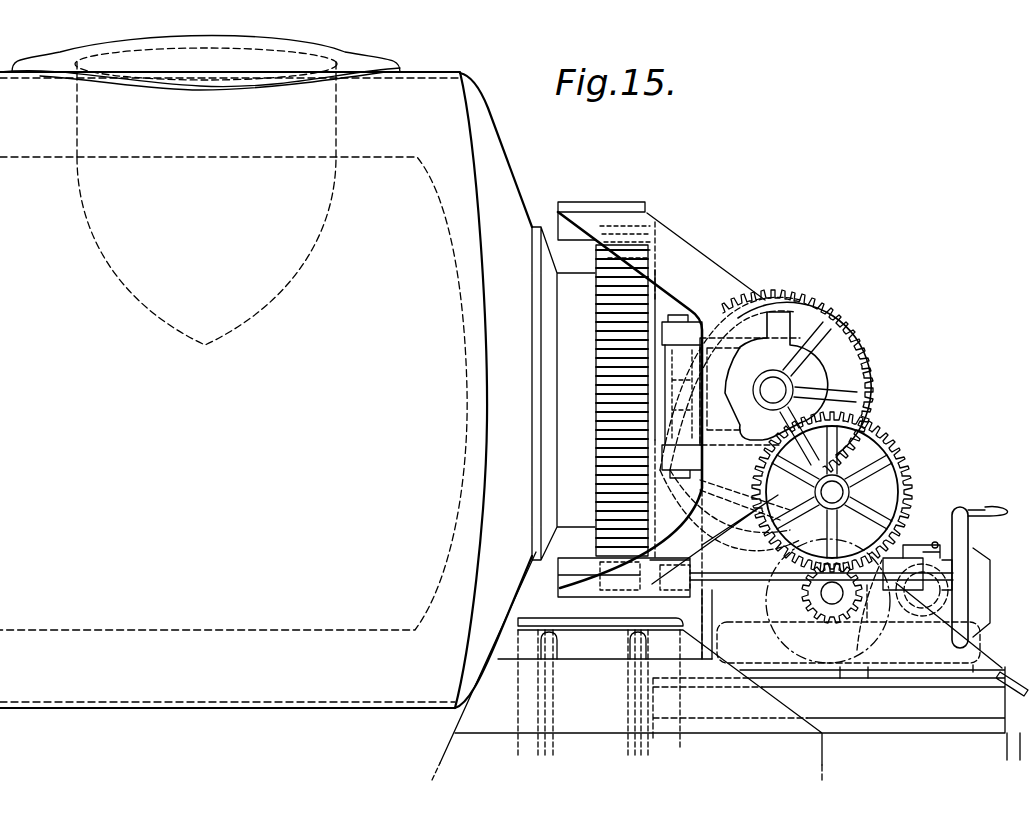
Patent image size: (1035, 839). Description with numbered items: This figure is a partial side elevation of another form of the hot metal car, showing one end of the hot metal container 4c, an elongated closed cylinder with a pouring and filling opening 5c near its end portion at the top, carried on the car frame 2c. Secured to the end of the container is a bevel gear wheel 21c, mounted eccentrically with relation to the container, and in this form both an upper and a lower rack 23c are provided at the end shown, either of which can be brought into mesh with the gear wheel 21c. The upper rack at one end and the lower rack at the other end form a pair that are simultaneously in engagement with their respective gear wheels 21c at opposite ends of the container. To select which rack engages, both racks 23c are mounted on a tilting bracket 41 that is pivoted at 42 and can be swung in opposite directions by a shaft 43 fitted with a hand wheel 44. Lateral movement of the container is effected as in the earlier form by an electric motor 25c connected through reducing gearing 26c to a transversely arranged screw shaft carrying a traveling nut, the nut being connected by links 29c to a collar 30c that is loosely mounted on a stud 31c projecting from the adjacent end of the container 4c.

The frame 2c is at (437, 755).
The hot metal container 4c is at (297, 388).
The pouring and filling opening 5c is at (221, 28).
The bevel gear wheel 21c is at (608, 353).
The rack 23c is at (584, 566).
The electric motor 25c is at (930, 530).
The reducing gearing 26c is at (890, 405).
The links 29c is at (738, 328).
The collar 30c is at (665, 398).
The stud 31c is at (662, 372).
The tilting bracket 41 is at (687, 253).
The pivot 42 is at (780, 386).
The shaft 43 is at (755, 577).
The hand wheel 44 is at (963, 560).